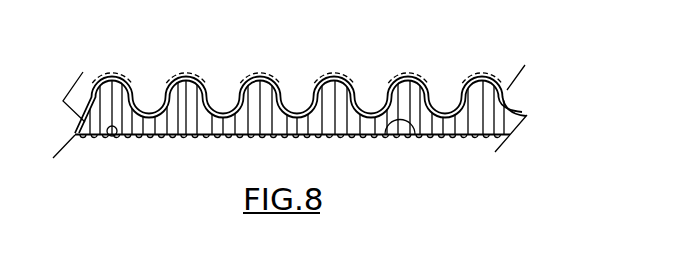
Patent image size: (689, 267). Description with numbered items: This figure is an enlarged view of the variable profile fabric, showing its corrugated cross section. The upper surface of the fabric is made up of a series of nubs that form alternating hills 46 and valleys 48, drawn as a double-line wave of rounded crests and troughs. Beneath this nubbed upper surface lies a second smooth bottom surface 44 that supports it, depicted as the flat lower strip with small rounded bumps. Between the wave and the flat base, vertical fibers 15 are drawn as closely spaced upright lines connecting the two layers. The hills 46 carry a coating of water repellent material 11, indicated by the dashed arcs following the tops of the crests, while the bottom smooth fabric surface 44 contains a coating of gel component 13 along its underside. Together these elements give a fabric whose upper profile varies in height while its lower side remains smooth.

The water repellent material 11 is at (115, 97).
The gel component 13 is at (93, 137).
The vertical fibers 15 is at (107, 104).
The smooth bottom surface 44 is at (113, 133).
The hills 46 is at (262, 103).
The valleys 48 is at (158, 120).